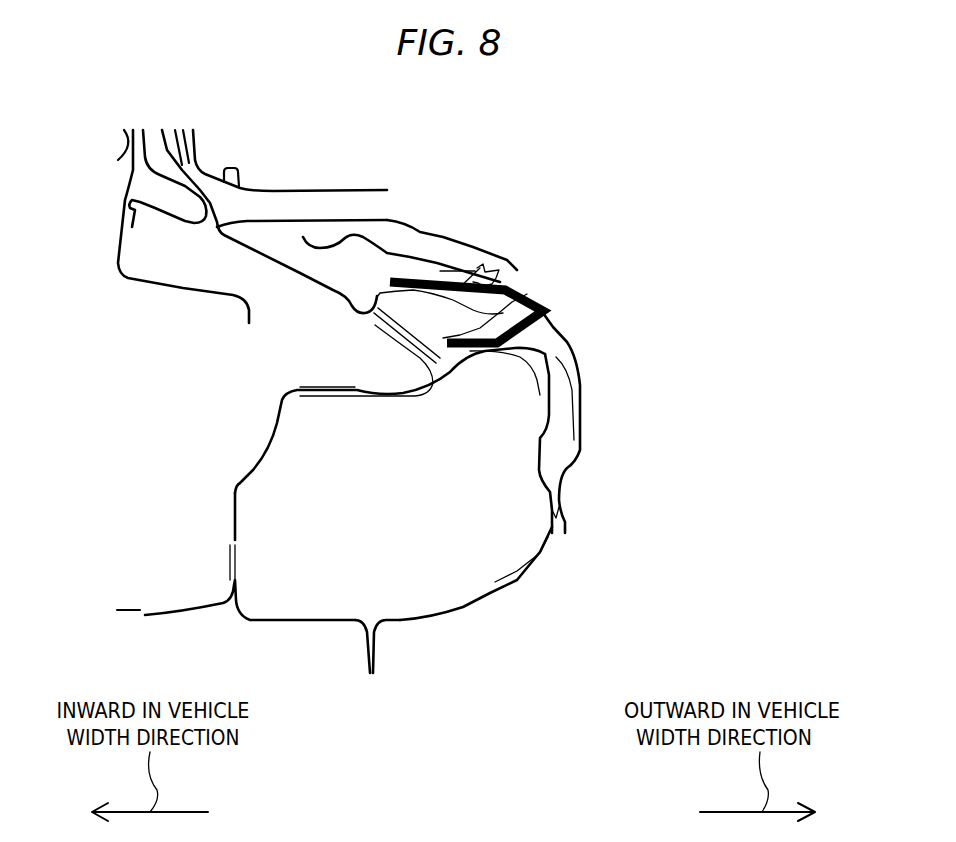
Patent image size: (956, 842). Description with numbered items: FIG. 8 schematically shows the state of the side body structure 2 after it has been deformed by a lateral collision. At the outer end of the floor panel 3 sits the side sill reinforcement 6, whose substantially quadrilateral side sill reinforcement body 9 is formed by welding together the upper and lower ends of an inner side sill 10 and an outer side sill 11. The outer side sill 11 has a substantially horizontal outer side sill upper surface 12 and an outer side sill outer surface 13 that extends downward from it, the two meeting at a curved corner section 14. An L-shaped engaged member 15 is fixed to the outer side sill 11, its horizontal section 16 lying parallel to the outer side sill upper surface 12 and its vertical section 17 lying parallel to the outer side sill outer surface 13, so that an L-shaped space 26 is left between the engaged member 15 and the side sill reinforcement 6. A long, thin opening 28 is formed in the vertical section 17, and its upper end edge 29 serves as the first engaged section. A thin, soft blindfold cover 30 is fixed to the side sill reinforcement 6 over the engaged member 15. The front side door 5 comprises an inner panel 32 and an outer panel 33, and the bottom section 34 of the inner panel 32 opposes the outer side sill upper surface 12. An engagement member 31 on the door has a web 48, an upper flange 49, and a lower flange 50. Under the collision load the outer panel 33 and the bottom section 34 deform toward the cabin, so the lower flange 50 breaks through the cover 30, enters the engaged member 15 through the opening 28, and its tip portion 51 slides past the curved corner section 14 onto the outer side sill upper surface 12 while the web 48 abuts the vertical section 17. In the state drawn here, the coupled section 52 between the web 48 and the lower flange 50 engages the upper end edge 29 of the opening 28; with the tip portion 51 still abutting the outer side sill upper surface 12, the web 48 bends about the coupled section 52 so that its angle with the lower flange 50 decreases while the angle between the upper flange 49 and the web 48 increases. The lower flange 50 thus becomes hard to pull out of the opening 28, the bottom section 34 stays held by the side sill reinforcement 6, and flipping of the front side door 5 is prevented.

The side body structure 2 is at (730, 578).
The floor panel 3 is at (135, 610).
The front side door 5 is at (335, 222).
The side sill reinforcement 6 is at (307, 617).
The side sill reinforcement body 9 is at (453, 603).
The inner side sill 10 is at (233, 540).
The outer side sill 11 is at (490, 593).
The outer side sill upper surface 12 is at (530, 345).
The outer side sill outer surface 13 is at (552, 538).
The curved corner section 14 is at (540, 353).
The engaged member 15 is at (347, 297).
The horizontal section 16 is at (397, 273).
The vertical section 17 is at (580, 370).
The L-shaped space 26 is at (443, 353).
The opening 28 is at (553, 318).
The upper end edge 29 is at (550, 300).
The blindfold cover 30 is at (560, 483).
The engagement member 31 is at (540, 307).
The inner panel 32 is at (293, 262).
The outer panel 33 is at (273, 220).
The bottom section 34 is at (410, 234).
The web 48 is at (543, 295).
The upper flange 49 is at (450, 268).
The lower flange 50 is at (522, 348).
The tip portion 51 is at (437, 278).
The coupled section 52 is at (548, 308).